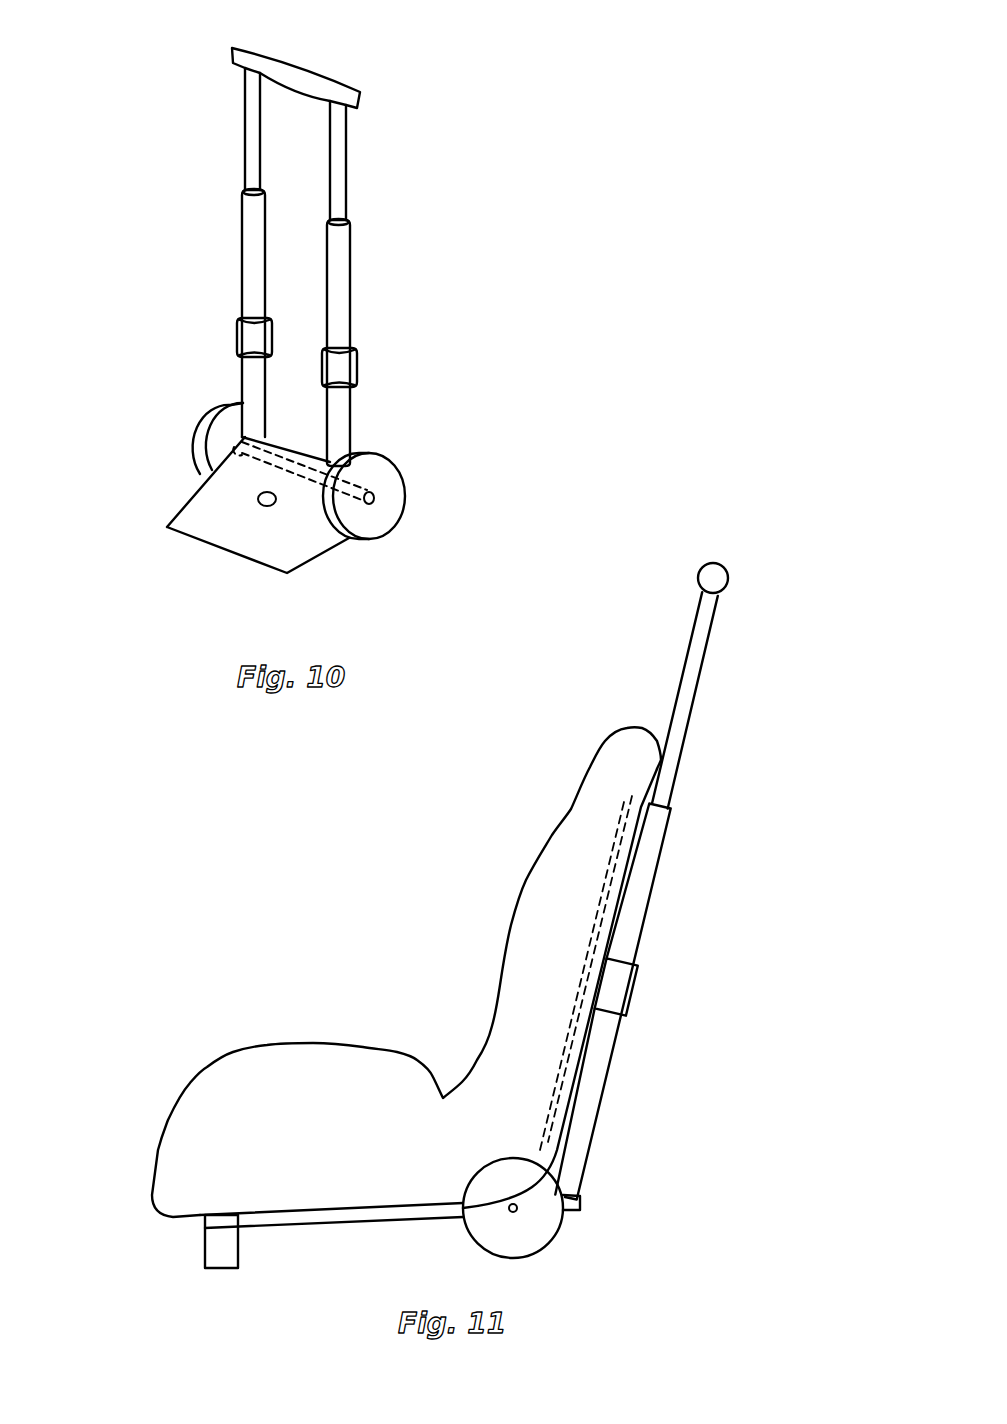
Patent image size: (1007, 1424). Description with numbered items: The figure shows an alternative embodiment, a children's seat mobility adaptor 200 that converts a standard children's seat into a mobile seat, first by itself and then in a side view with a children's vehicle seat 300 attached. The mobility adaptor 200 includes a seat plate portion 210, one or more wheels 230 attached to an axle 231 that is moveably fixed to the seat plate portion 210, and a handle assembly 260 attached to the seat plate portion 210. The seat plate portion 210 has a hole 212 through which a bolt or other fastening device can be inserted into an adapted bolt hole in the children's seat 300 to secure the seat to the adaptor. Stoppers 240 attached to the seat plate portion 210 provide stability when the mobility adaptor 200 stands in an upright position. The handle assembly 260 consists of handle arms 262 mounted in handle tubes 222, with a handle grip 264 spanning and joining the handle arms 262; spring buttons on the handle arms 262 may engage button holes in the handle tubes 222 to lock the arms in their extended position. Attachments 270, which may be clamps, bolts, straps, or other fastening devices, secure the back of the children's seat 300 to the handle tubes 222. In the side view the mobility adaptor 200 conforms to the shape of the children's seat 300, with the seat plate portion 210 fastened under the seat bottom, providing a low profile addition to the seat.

In FIG. 10, the children's seat mobility adaptor 200 is at (126, 259).
In FIG. 10, the seat plate portion 210 is at (202, 508).
In FIG. 11, the seat plate portion 210 is at (350, 1215).
In FIG. 10, the hole 212 is at (260, 505).
In FIG. 10, the handle tubes 222 is at (258, 240).
In FIG. 11, the handle tubes 222 is at (643, 865).
In FIG. 10, the wheels 230 is at (372, 522).
In FIG. 11, the wheels 230 is at (537, 1237).
In FIG. 10, the axle 231 is at (260, 463).
In FIG. 11, the axle 231 is at (512, 1212).
In FIG. 11, the stoppers 240 is at (222, 1248).
In FIG. 10, the handle assembly 260 is at (530, 45).
In FIG. 10, the handle arms 262 is at (252, 135).
In FIG. 11, the handle arms 262 is at (690, 680).
In FIG. 10, the handle grip 264 is at (305, 82).
In FIG. 11, the handle grip 264 is at (722, 582).
In FIG. 10, the attachments 270 is at (262, 337).
In FIG. 11, the attachments 270 is at (617, 988).
In FIG. 11, the children's vehicle seat 300 is at (198, 1092).